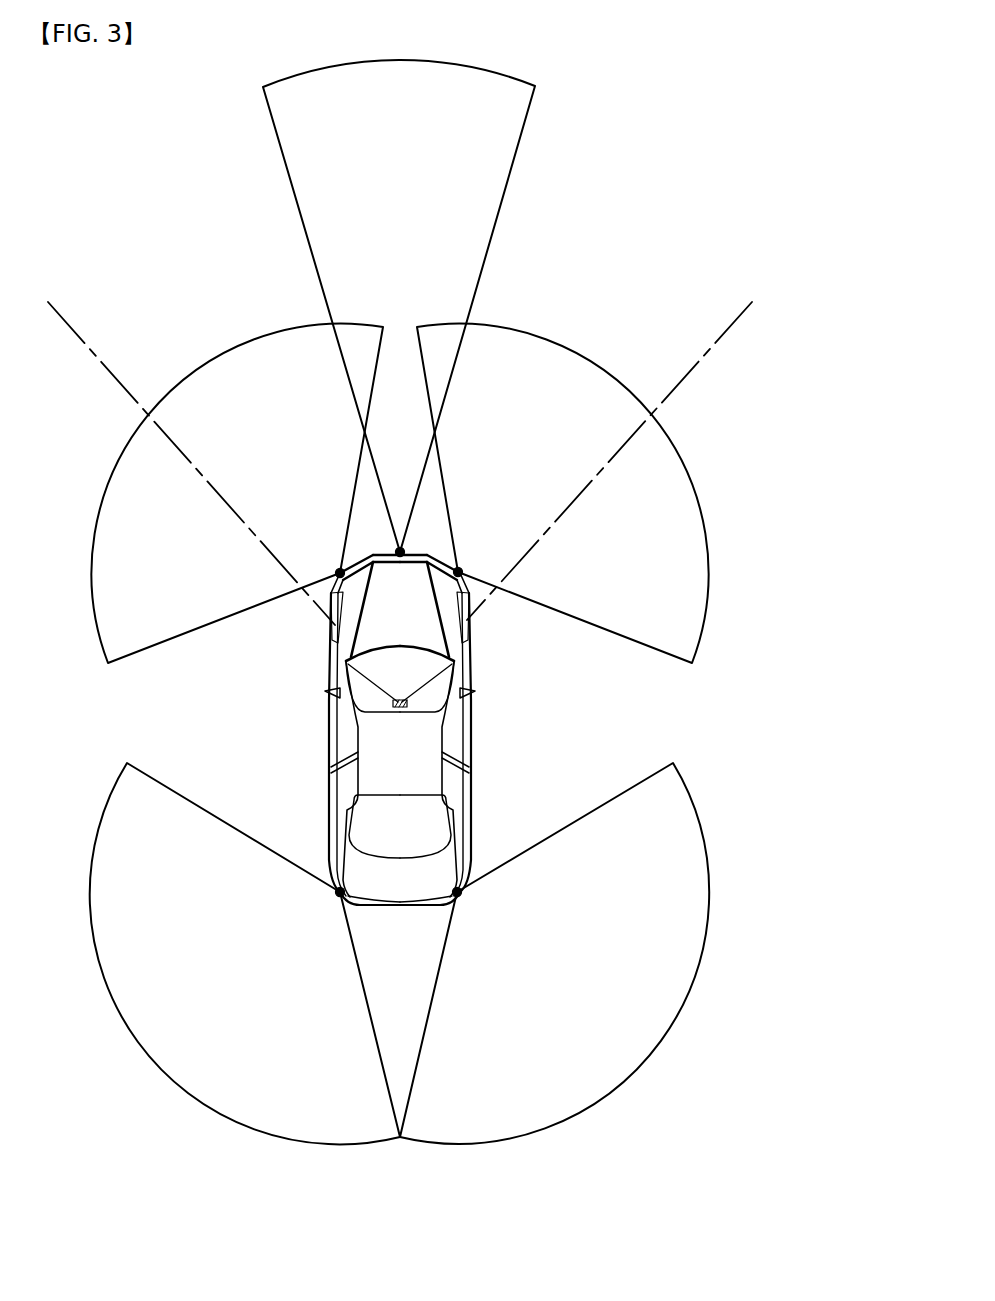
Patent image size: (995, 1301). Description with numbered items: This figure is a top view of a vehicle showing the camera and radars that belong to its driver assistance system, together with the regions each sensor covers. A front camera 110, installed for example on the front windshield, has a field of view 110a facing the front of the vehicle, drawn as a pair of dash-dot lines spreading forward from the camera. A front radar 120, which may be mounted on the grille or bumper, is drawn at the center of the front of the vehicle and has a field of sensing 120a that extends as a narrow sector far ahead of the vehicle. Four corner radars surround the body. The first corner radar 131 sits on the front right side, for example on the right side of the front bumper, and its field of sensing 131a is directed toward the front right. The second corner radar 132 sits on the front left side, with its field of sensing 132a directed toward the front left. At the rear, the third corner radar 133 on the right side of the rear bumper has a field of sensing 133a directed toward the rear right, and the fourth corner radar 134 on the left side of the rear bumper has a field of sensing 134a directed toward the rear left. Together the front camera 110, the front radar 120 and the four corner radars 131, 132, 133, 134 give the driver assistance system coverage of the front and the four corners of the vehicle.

The front camera 110 is at (407, 704).
The field of view 110a is at (713, 348).
The front radar 120 is at (401, 551).
The field of sensing 120a is at (483, 193).
The first corner radar 131 is at (458, 572).
The field of sensing 131a is at (590, 377).
The second corner radar 132 is at (340, 573).
The field of sensing 132a is at (210, 377).
The third corner radar 133 is at (457, 893).
The field of sensing 133a is at (665, 1030).
The fourth corner radar 134 is at (340, 893).
The field of sensing 134a is at (135, 1030).